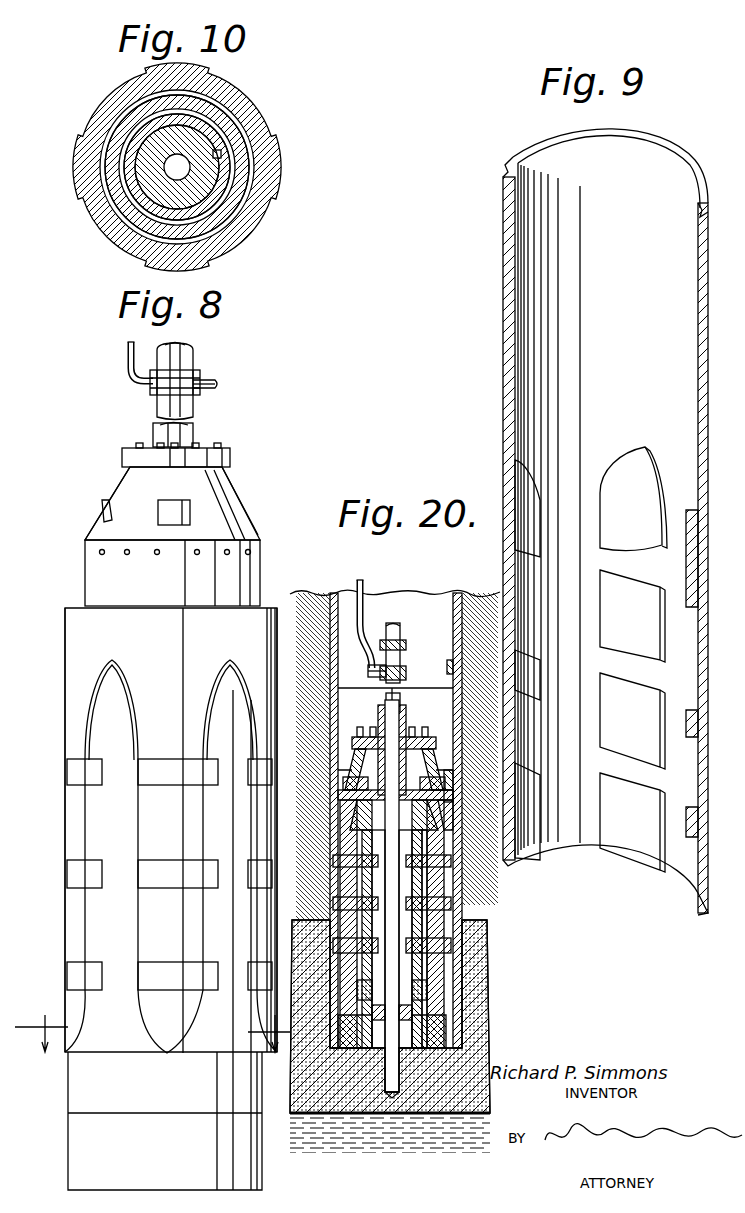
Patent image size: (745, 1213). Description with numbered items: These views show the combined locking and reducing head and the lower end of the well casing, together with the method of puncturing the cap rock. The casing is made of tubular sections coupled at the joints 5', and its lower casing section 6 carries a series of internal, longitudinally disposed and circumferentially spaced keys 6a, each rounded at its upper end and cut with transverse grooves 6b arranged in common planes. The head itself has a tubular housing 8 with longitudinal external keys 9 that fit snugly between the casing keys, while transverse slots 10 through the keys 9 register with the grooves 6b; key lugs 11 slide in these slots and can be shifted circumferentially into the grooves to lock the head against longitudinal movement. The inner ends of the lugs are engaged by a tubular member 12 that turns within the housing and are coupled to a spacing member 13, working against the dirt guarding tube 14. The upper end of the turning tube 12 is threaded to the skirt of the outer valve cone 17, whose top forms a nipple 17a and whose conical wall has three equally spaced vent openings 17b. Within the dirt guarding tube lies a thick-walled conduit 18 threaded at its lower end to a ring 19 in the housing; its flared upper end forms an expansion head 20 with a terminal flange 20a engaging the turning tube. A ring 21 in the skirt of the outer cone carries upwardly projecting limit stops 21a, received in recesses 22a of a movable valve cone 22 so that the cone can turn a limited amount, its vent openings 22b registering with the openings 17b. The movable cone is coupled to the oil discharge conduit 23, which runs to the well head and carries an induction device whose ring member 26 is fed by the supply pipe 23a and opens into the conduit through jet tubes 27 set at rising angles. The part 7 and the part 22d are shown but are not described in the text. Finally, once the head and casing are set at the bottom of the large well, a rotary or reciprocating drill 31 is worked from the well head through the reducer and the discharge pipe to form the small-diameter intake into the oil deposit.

In FIG. 20, the joints 5' is at (441, 660).
In FIG. 9, the joints 5' is at (585, 186).
In FIG. 20, the lower casing section 6 is at (330, 706).
In FIG. 9, the lower casing section 6 is at (503, 422).
In FIG. 20, the keys 6a is at (455, 878).
In FIG. 9, the keys 6a is at (633, 644).
In FIG. 20, the transverse grooves 6b is at (445, 960).
In FIG. 9, the transverse grooves 6b is at (598, 550).
In FIG. 8, the outer shell wall 7 is at (65, 697).
In FIG. 20, the outer shell wall 7 is at (345, 840).
In FIG. 10, the tubular housing 8 is at (245, 222).
In FIG. 8, the tubular housing 8 is at (115, 612).
In FIG. 20, the tubular housing 8 is at (440, 845).
In FIG. 10, the external keys 9 is at (280, 186).
In FIG. 8, the external keys 9 is at (55, 832).
In FIG. 8, the transverse slots 10 is at (152, 858).
In FIG. 20, the transverse slots 10 is at (372, 885).
In FIG. 8, the key lugs 11 is at (80, 870).
In FIG. 20, the key lugs 11 is at (451, 861).
In FIG. 10, the tubular member 12 is at (217, 116).
In FIG. 20, the tubular member 12 is at (430, 838).
In FIG. 10, the spacing member 13 is at (222, 172).
In FIG. 20, the spacing member 13 is at (412, 940).
In FIG. 10, the dirt guarding tube 14 is at (217, 154).
In FIG. 20, the dirt guarding tube 14 is at (427, 930).
In FIG. 8, the outer valve cone 17 is at (240, 532).
In FIG. 20, the outer valve cone 17 is at (440, 780).
In FIG. 8, the nipple 17a is at (135, 465).
In FIG. 20, the nipple 17a is at (420, 745).
In FIG. 8, the vent openings 17b is at (160, 512).
In FIG. 20, the vent openings 17b is at (455, 776).
In FIG. 10, the conduit 18 is at (187, 192).
In FIG. 20, the conduit 18 is at (385, 872).
In FIG. 8, the ring 19 is at (165, 1121).
In FIG. 20, the ring 19 is at (440, 1040).
In FIG. 20, the expansion head 20 is at (357, 806).
In FIG. 20, the terminal flange 20a is at (453, 814).
In FIG. 20, the ring 21 is at (356, 745).
In FIG. 20, the limit stops 21a is at (455, 796).
In FIG. 20, the movable valve cone 22 is at (420, 750).
In FIG. 20, the recesses 22a is at (343, 784).
In FIG. 20, the vent openings 22b is at (378, 740).
In FIG. 8, the nipple 22d is at (195, 432).
In FIG. 20, the nipple 22d is at (386, 706).
In FIG. 8, the oil discharge conduit 23 is at (210, 392).
In FIG. 20, the oil discharge conduit 23 is at (405, 660).
In FIG. 8, the supply pipe 23a is at (125, 350).
In FIG. 20, the supply pipe 23a is at (362, 578).
In FIG. 8, the ring member 26 is at (220, 382).
In FIG. 20, the ring member 26 is at (368, 670).
In FIG. 8, the jet tubes 27 is at (160, 378).
In FIG. 20, the drill 31 is at (400, 695).